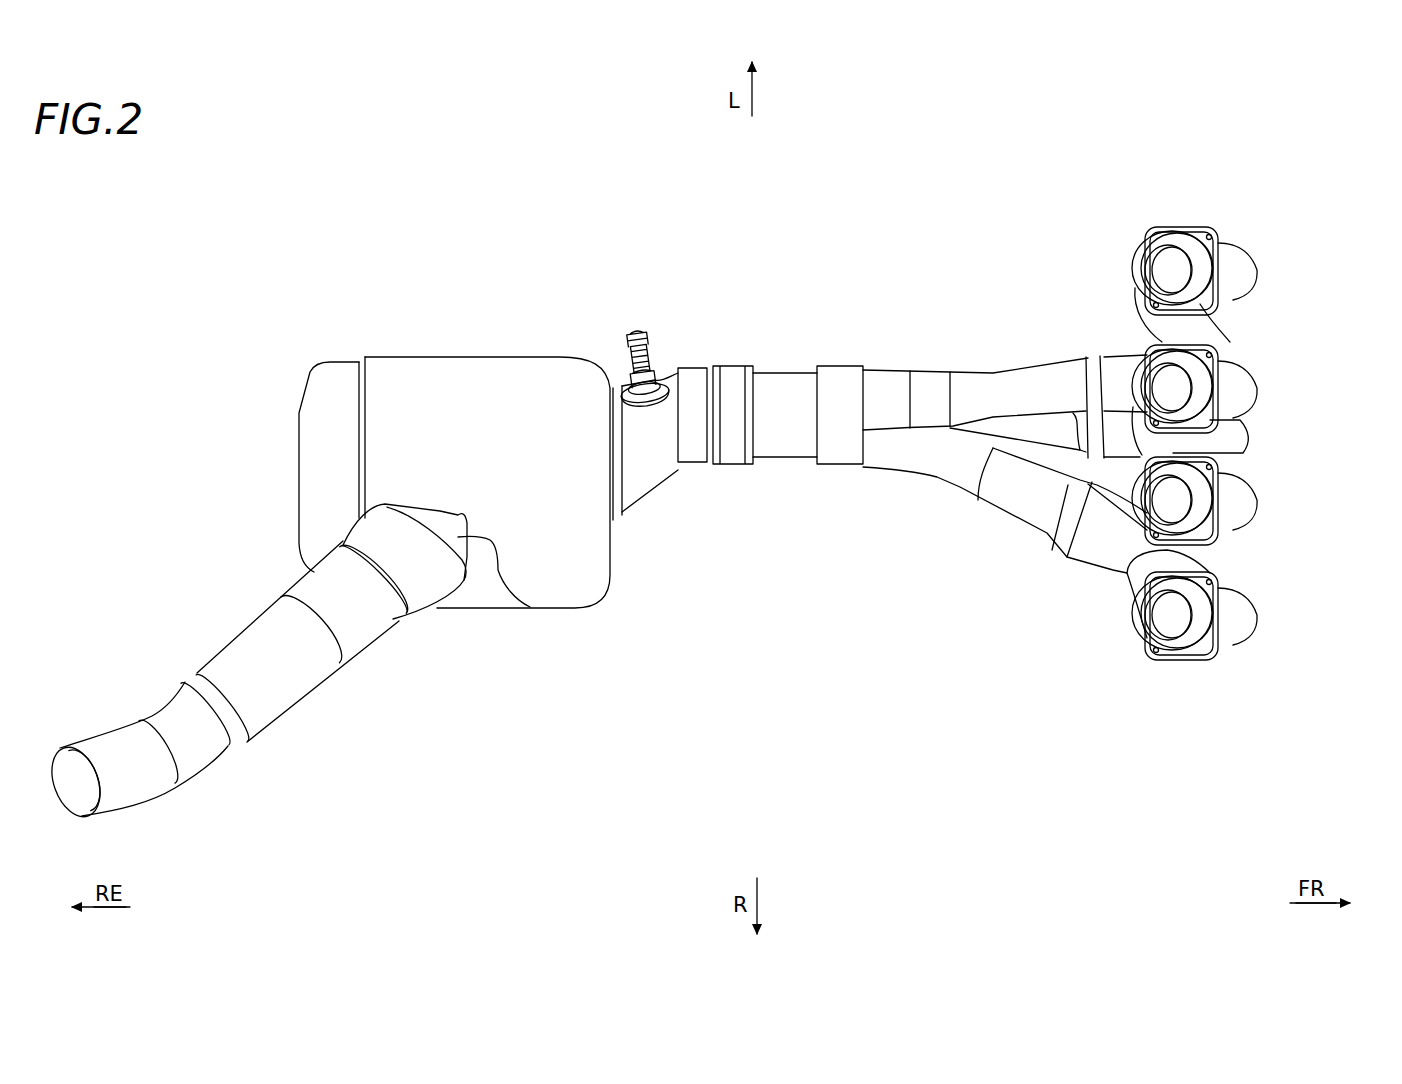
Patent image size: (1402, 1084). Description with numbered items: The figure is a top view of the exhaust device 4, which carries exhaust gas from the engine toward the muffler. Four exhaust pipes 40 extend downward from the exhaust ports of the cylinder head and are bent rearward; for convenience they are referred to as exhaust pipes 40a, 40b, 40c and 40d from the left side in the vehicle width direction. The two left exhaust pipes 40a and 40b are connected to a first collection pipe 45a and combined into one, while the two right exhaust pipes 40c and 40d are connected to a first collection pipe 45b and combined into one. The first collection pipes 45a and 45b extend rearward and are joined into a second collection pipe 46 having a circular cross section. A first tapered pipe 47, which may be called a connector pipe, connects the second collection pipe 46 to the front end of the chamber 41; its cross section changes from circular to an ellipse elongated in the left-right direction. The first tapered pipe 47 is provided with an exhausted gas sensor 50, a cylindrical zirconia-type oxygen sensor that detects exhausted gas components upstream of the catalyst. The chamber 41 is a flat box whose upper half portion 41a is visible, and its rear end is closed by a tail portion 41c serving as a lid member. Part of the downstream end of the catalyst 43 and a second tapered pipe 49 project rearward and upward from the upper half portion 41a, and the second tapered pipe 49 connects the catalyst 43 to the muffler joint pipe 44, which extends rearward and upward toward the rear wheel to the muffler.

The exhaust device 4 is at (597, 200).
The exhaust pipes 40 is at (1332, 312).
The exhaust pipe 40a is at (1237, 300).
The exhaust pipe 40b is at (1237, 403).
The exhaust pipe 40c is at (1237, 520).
The exhaust pipe 40d is at (1237, 635).
The chamber 41 is at (455, 352).
The upper half portion 41a is at (520, 368).
The tail portion 41c is at (303, 376).
The catalyst 43 is at (523, 590).
The muffler joint pipe 44 is at (148, 782).
The first collection pipe 45a is at (935, 372).
The first collection pipe 45b is at (918, 472).
The second collection pipe 46 is at (782, 380).
The first tapered pipe 47 is at (662, 478).
The second tapered pipe 49 is at (430, 598).
The exhausted gas sensor 50 is at (640, 330).